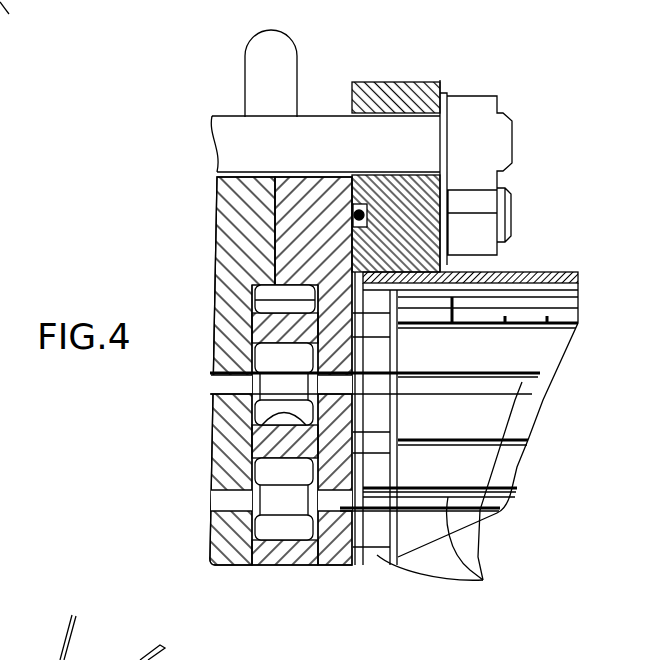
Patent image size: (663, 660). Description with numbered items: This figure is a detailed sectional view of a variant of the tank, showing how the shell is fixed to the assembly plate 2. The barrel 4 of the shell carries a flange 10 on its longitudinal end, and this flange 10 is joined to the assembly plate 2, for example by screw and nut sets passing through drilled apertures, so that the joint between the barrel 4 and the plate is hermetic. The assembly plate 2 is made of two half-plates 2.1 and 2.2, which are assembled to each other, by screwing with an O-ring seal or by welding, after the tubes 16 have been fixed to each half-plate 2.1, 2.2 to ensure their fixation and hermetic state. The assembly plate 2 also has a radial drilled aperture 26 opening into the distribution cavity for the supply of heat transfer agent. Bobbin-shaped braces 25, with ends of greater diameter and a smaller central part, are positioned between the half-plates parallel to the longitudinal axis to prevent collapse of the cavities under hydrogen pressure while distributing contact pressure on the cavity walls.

The assembly plate 2 is at (324, 106).
The half-plate 2.1 is at (300, 224).
The half-plate 2.2 is at (242, 266).
The barrel 4 is at (540, 272).
The flange 10 is at (418, 82).
The tubes 16 is at (0, 24).
The braces 25 is at (287, 500).
The radial drilled aperture 26 is at (268, 75).